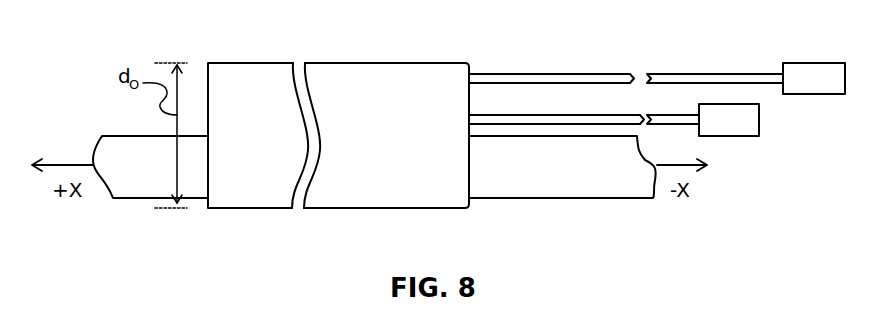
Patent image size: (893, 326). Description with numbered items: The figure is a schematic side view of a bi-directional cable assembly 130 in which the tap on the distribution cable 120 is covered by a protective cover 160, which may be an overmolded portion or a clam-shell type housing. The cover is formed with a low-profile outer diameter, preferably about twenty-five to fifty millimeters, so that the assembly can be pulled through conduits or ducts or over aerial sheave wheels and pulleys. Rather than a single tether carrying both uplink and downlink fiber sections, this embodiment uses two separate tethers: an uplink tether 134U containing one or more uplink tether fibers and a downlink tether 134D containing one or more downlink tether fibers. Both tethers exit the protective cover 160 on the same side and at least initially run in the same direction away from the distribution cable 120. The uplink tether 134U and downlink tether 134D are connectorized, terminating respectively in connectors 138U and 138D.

The distribution cable 120 is at (124, 135).
The bi-directional cable assembly 130 is at (303, 115).
The protective cover 160 is at (272, 62).
The uplink tether 134U is at (500, 66).
The downlink tether 134D is at (560, 107).
The uplink connector 138U is at (813, 62).
The downlink connector 138D is at (730, 137).